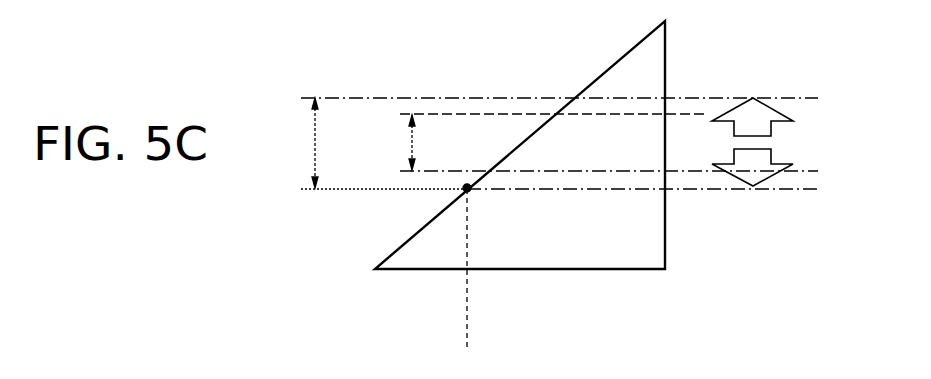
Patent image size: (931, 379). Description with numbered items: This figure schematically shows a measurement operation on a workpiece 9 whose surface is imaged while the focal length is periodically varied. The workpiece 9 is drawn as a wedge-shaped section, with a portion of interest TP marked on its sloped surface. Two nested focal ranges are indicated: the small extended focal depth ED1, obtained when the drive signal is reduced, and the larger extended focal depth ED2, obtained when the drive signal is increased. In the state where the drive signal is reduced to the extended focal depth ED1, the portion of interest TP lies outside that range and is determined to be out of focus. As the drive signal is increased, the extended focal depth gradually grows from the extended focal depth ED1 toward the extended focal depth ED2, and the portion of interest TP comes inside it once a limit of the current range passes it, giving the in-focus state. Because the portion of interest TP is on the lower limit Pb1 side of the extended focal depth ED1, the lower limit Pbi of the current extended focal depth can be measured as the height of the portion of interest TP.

The workpiece 9 is at (665, 224).
The extended focal depth ED1 is at (441, 142).
The extended focal depth ED2 is at (342, 143).
The lower limit Pb1 is at (634, 165).
The lower limit Pbi is at (584, 195).
The portion of interest TP is at (443, 269).